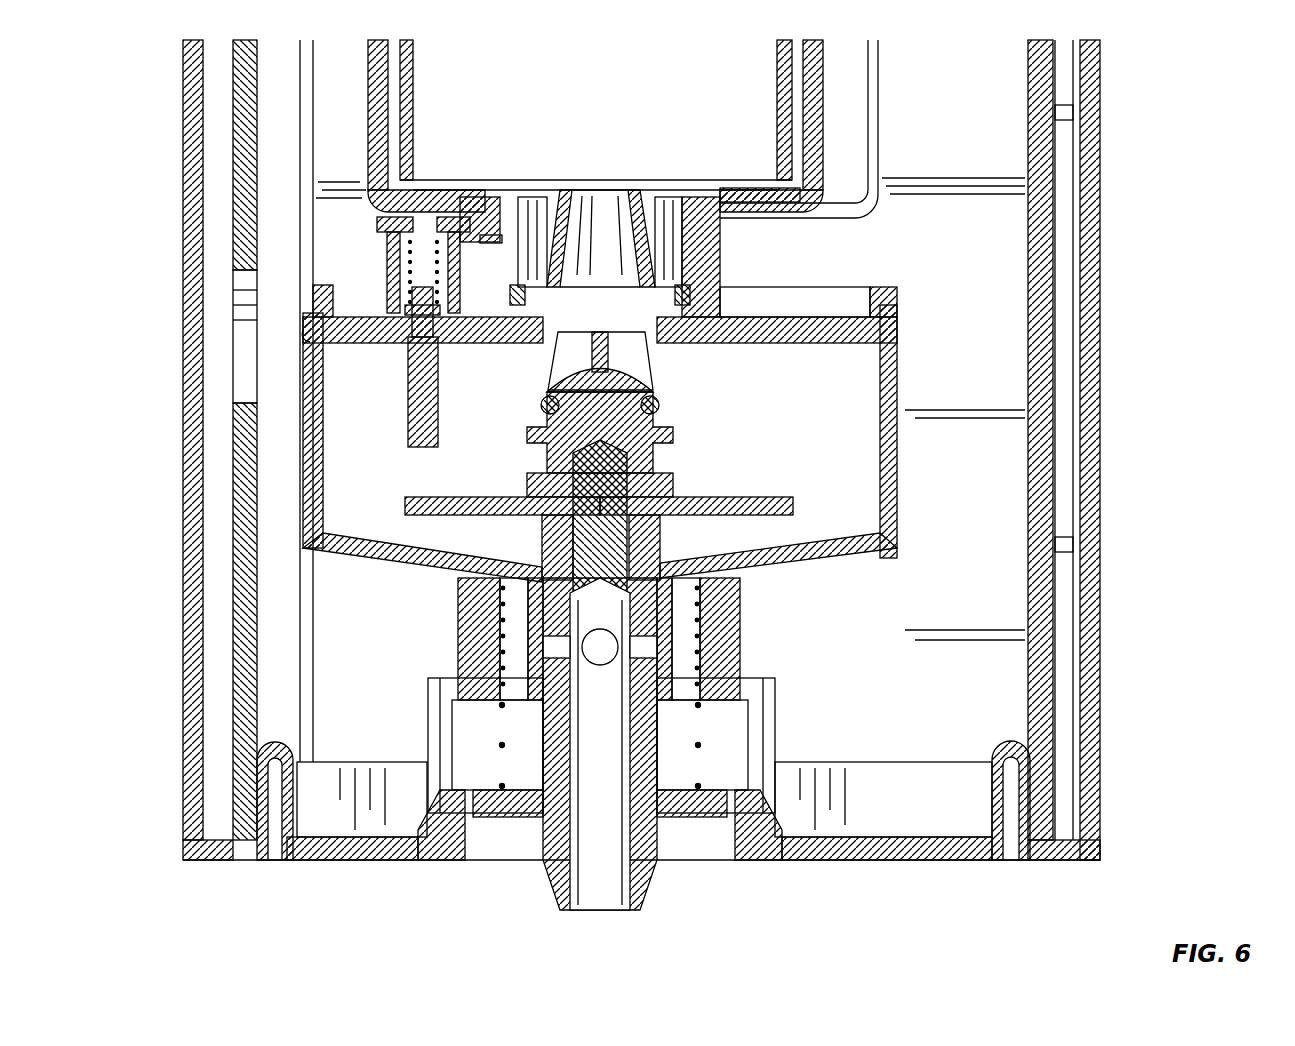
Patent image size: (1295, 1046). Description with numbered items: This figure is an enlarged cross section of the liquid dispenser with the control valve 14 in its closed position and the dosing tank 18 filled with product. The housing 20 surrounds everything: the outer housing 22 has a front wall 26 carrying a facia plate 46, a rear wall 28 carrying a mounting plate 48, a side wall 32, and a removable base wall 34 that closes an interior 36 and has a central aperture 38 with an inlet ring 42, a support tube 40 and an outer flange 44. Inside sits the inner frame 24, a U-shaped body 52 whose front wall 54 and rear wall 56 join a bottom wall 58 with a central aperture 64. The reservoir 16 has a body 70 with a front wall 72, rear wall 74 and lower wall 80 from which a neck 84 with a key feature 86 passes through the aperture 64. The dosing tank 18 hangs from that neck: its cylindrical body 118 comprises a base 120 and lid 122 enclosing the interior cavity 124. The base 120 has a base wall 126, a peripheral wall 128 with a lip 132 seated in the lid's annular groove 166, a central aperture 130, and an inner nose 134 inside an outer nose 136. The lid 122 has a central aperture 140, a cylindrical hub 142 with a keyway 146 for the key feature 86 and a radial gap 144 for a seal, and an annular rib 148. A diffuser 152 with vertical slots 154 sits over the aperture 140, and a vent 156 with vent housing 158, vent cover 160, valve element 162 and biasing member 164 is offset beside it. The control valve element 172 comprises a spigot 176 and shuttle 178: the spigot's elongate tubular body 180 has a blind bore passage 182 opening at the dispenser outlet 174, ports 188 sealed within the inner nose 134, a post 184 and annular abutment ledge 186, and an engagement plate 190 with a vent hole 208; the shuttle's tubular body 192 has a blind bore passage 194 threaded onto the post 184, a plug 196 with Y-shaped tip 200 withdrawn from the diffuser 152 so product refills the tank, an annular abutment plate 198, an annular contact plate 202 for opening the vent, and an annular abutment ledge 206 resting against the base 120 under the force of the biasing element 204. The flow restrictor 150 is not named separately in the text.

The control valve 14 is at (748, 442).
The reservoir 16 is at (800, 78).
The dosing tank 18 is at (968, 326).
The housing 20 is at (1118, 92).
The outer housing 22 is at (1058, 162).
The inner frame 24 is at (838, 122).
The front wall 26 is at (1045, 313).
The rear wall 28 is at (235, 493).
The side wall 32 is at (990, 592).
The base wall 34 is at (355, 840).
The interior 36 is at (644, 756).
The central aperture 38 is at (445, 842).
The support tube 40 is at (430, 736).
The inlet ring 42 is at (756, 832).
The outer flange 44 is at (955, 762).
The facia plate 46 is at (1098, 178).
The mounting plate 48 is at (200, 178).
The U-shaped body 52 is at (828, 152).
The front wall 54 is at (862, 186).
The rear wall 56 is at (372, 110).
The bottom wall 58 is at (788, 210).
The central aperture 64 is at (712, 198).
The body 70 is at (792, 100).
The front wall 72 is at (780, 62).
The rear wall 74 is at (413, 66).
The lower wall 80 is at (760, 190).
The neck 84 is at (702, 240).
The key feature 86 is at (490, 232).
The cylindrical body 118 is at (918, 392).
The base 120 is at (898, 472).
The lid 122 is at (902, 278).
The interior cavity 124 is at (808, 372).
The base wall 126 is at (852, 575).
The peripheral wall 128 is at (895, 500).
The central aperture 130 is at (562, 557).
The lip 132 is at (897, 330).
The inner nose 134 is at (682, 630).
The outer nose 136 is at (702, 632).
The central aperture 140 is at (650, 345).
The cylindrical hub 142 is at (720, 270).
The radial gap 144 is at (660, 222).
The keyway 146 is at (482, 230).
The annular rib 148 is at (876, 290).
The cone 150 is at (622, 190).
The diffuser 152 is at (564, 190).
The vertical slots 154 is at (570, 272).
The vent 156 is at (378, 250).
The vent housing 158 is at (386, 268).
The vent cover 160 is at (380, 220).
The valve element 162 is at (406, 425).
The biasing member 164 is at (420, 298).
The annular groove 166 is at (305, 340).
The valve element 172 is at (858, 440).
The dispenser outlet 174 is at (572, 908).
The spigot 176 is at (542, 766).
The shuttle 178 is at (406, 505).
The elongate tubular body 180 is at (545, 727).
The blind bore passage 182 is at (616, 768).
The post 184 is at (632, 497).
The annular abutment ledge 186 is at (662, 546).
The ports 188 is at (602, 662).
The engagement plate 190 is at (716, 792).
The tubular body 192 is at (556, 486).
The blind bore passage 194 is at (576, 468).
The plug 196 is at (553, 375).
The annular abutment plate 198 is at (673, 436).
The Y-shaped tip 200 is at (600, 330).
The annular contact plate 202 is at (772, 497).
The biasing element 204 is at (458, 672).
The annular abutment ledge 206 is at (500, 596).
The vent hole 208 is at (666, 820).